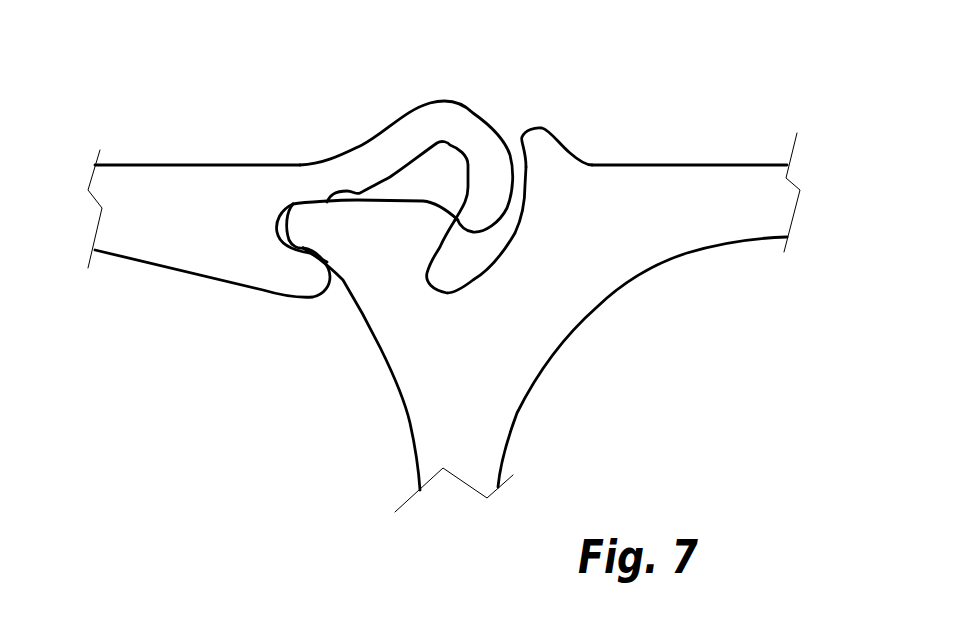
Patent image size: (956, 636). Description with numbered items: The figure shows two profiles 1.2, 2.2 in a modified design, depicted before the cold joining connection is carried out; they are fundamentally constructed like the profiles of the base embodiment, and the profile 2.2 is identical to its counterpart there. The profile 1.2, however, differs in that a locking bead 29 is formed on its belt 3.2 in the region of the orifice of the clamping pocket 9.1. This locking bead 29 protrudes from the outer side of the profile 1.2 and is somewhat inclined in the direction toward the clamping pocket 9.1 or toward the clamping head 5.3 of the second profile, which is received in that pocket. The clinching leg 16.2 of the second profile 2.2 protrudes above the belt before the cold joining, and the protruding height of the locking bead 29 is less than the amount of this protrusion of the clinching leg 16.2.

The profile 2.2 is at (187, 160).
The clinching leg 16.2 is at (466, 100).
The locking bead 29 is at (547, 143).
The profile 1.2 is at (720, 162).
The belt 3.2 is at (768, 214).
The clamping head 5.3 is at (397, 246).
The clamping pocket 9.1 is at (470, 263).